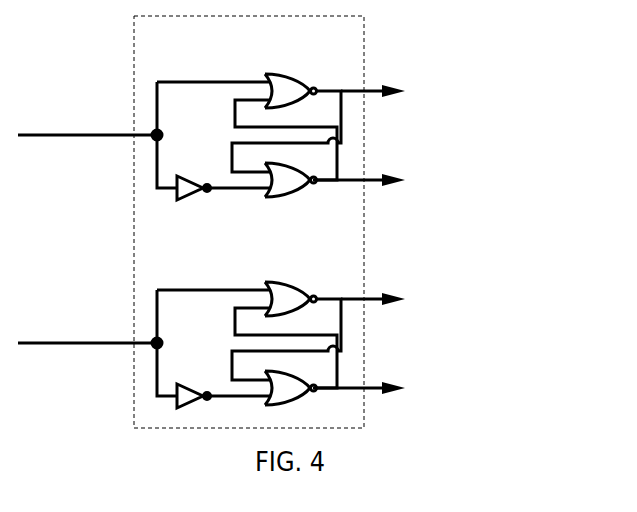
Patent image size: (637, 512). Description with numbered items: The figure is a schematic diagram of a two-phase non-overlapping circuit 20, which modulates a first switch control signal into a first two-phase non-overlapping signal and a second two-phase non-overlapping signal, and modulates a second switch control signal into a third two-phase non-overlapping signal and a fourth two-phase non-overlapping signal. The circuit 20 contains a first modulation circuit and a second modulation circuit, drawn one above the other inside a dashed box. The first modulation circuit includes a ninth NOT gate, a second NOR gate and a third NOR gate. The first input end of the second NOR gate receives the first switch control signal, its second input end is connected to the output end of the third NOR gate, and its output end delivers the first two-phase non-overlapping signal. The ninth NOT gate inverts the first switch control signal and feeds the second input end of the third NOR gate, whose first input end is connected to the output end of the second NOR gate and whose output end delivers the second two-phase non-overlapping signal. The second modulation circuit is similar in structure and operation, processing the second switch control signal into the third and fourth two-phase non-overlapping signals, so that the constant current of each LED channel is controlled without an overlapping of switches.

The latch circuit block 20 is at (249, 222).